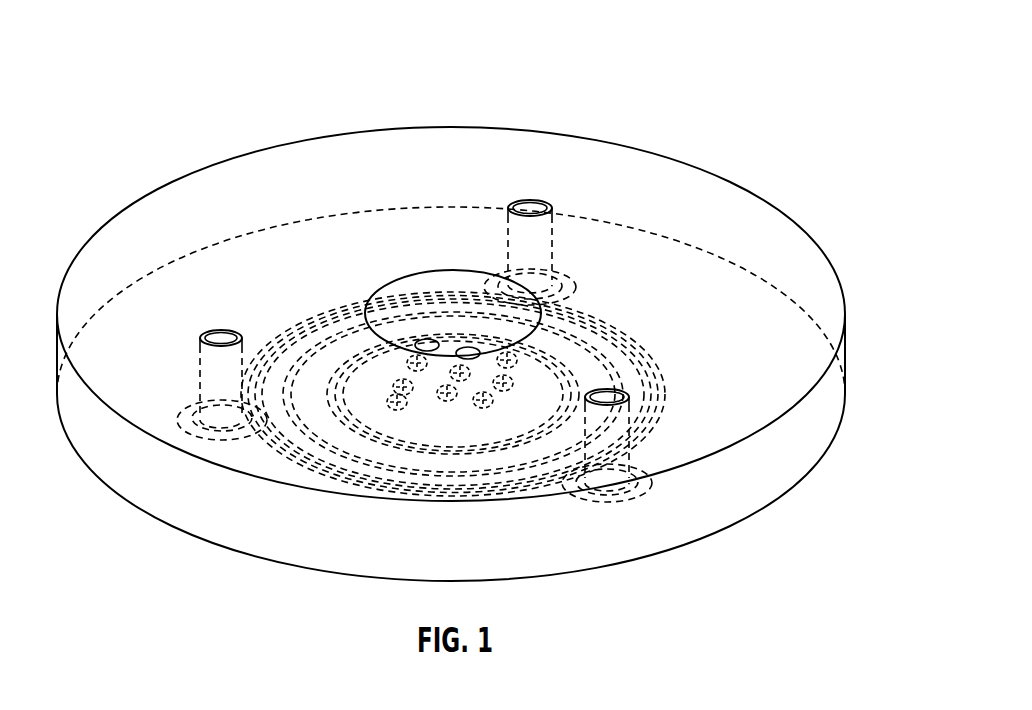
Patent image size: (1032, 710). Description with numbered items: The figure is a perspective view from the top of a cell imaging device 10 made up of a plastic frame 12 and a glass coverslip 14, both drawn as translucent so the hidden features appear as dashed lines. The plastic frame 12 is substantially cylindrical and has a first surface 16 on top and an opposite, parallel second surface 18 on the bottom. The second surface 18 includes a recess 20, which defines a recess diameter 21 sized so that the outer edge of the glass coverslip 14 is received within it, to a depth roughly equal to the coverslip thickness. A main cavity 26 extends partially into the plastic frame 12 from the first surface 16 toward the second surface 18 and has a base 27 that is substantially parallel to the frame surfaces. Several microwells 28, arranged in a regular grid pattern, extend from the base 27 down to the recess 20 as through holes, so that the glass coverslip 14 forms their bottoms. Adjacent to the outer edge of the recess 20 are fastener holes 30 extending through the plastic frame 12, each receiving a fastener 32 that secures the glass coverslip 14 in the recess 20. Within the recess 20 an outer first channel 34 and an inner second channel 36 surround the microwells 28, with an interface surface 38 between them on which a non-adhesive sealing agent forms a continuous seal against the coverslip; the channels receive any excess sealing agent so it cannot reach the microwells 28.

The cell imaging device 10 is at (108, 86).
The plastic frame 12 is at (778, 203).
The glass coverslip 14 is at (665, 400).
The first surface 16 is at (227, 216).
The second surface 18 is at (123, 503).
The recess 20 is at (587, 310).
The recess diameter 21 is at (612, 322).
The main cavity 26 is at (363, 333).
The base 27 is at (447, 343).
The microwell 28 is at (400, 405).
The fastener hole 30 is at (545, 200).
The fastener 32 is at (504, 270).
The first channel 34 is at (287, 437).
The second channel 36 is at (363, 420).
The interface surface 38 is at (330, 358).